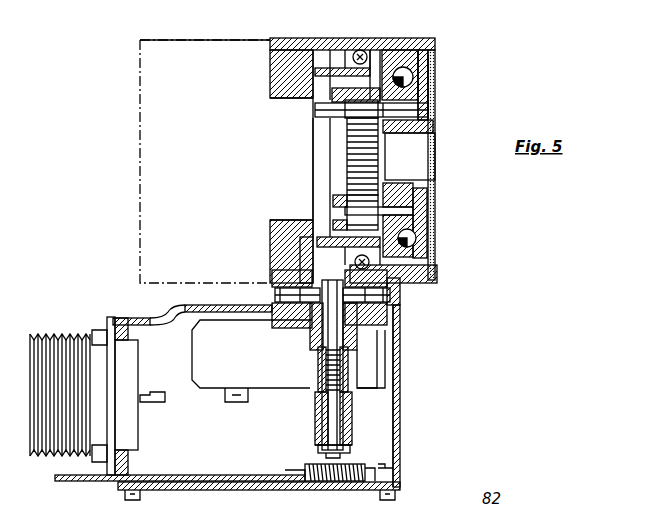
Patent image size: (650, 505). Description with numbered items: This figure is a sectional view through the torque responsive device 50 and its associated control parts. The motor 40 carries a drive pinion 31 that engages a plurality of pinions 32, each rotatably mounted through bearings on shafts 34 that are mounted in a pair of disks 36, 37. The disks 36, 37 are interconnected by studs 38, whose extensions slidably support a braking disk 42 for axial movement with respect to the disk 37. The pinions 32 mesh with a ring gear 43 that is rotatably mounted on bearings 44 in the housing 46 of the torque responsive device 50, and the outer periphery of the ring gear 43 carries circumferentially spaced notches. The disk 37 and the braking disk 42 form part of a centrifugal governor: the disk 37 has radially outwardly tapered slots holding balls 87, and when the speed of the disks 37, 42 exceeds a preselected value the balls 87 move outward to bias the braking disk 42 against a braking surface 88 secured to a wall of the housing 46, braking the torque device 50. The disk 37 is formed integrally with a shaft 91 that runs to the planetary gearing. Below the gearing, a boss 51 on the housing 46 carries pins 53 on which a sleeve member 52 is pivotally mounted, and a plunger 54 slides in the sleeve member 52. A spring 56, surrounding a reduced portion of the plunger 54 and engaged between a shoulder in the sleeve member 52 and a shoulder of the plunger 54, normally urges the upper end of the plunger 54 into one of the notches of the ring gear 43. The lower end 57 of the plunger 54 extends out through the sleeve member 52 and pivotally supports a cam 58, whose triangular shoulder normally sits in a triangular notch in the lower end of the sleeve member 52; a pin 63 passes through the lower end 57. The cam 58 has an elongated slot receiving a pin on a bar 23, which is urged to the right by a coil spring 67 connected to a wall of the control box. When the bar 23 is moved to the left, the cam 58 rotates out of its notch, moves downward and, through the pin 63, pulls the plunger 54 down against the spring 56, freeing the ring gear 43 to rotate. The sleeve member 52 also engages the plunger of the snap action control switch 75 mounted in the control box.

The motor 40 is at (182, 42).
The disk 37 is at (436, 40).
The bearings 44 is at (363, 48).
The housing 46 is at (403, 48).
The balls 87 is at (435, 46).
The braking disk 42 is at (430, 70).
The braking surface 88 is at (432, 100).
The disk 36 is at (332, 100).
The studs 38 is at (322, 114).
The drive pinion 31 is at (347, 155).
The shaft 91 is at (435, 180).
The pinions 32 is at (345, 188).
The shafts 34 is at (350, 210).
The ring gear 43 is at (345, 246).
The torque responsive device 50 is at (416, 327).
The pins 53 is at (275, 296).
The snap action control switch 75 is at (232, 340).
The boss 51 is at (395, 342).
The sleeve member 52 is at (312, 335).
The plunger 54 is at (352, 347).
The spring 56 is at (320, 370).
The lower end of plunger 57 is at (350, 408).
The cam 58 is at (350, 445).
The pin 63 is at (318, 452).
The coil spring 67 is at (370, 462).
The bar 23 is at (206, 466).